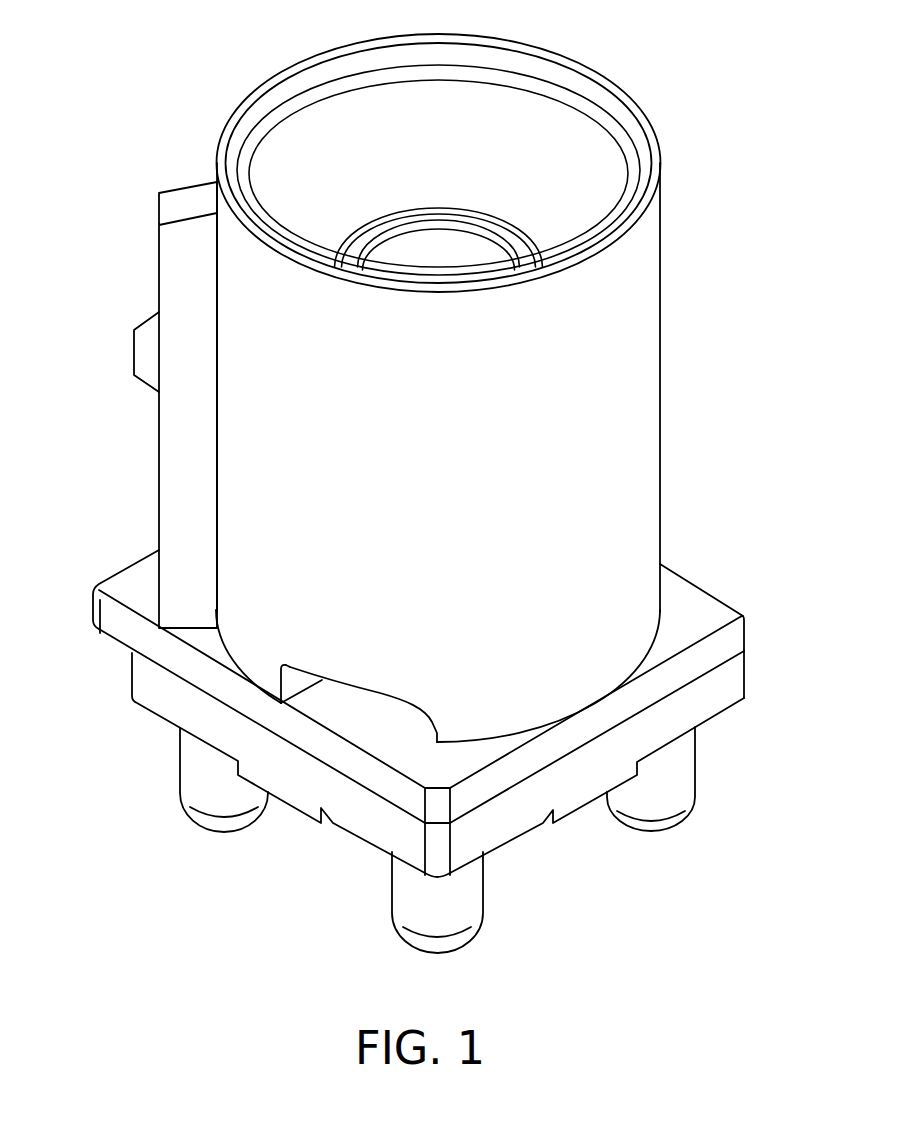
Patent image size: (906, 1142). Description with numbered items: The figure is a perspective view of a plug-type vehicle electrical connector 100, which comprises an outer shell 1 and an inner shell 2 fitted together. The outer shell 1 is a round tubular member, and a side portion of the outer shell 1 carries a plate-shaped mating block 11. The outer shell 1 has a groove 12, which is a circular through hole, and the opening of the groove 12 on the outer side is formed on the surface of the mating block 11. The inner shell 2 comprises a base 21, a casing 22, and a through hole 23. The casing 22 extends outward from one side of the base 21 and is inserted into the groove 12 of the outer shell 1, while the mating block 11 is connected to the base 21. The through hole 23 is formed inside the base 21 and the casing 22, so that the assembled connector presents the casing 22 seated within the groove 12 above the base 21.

The vehicle electrical connector 100 is at (94, 339).
The outer shell 1 is at (647, 370).
The mating block 11 is at (700, 603).
The groove 12 is at (558, 124).
The inner shell 2 is at (351, 827).
The base 21 is at (180, 700).
The casing 22 is at (434, 220).
The through hole 23 is at (407, 257).